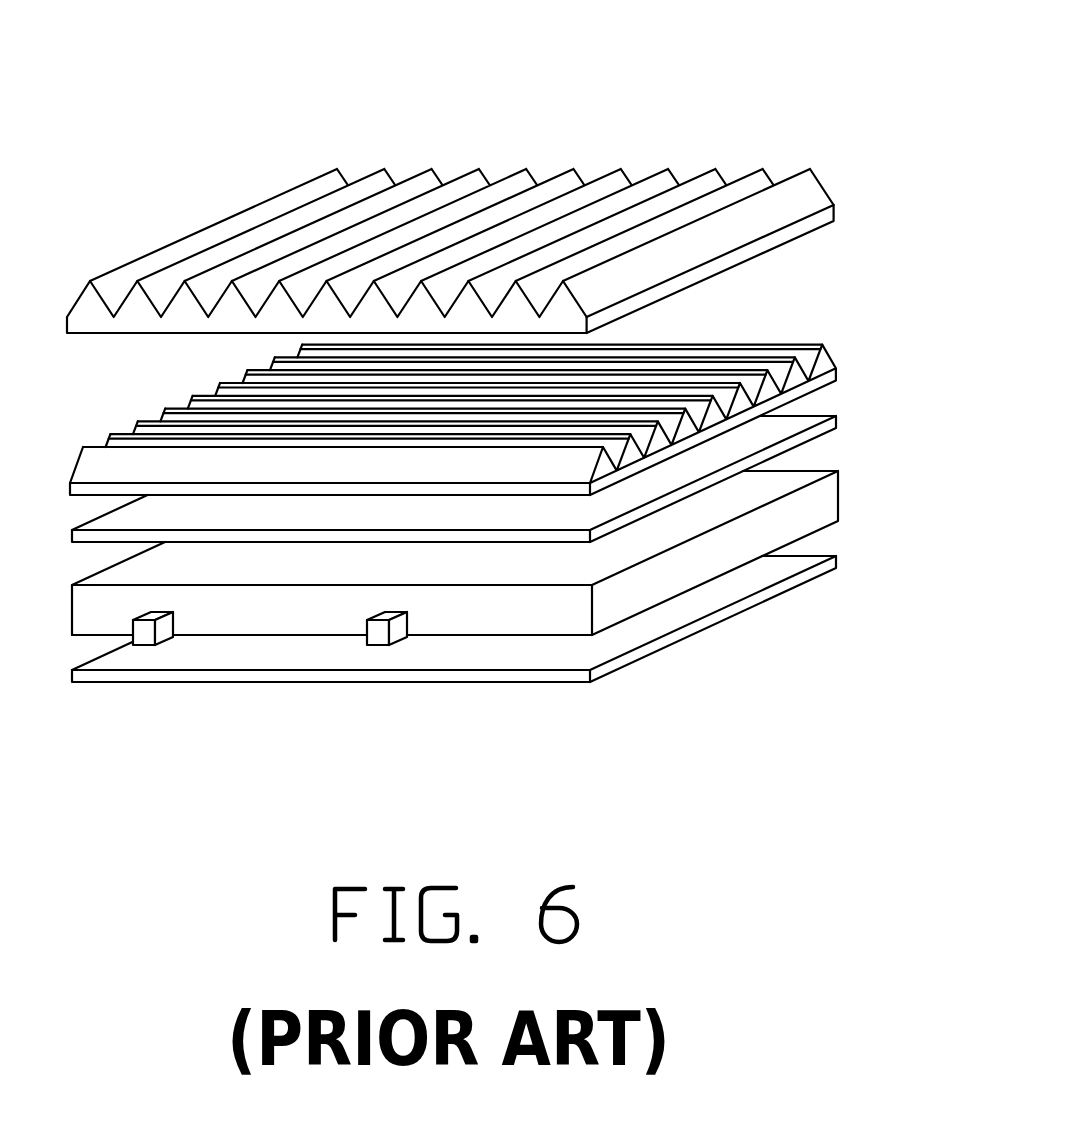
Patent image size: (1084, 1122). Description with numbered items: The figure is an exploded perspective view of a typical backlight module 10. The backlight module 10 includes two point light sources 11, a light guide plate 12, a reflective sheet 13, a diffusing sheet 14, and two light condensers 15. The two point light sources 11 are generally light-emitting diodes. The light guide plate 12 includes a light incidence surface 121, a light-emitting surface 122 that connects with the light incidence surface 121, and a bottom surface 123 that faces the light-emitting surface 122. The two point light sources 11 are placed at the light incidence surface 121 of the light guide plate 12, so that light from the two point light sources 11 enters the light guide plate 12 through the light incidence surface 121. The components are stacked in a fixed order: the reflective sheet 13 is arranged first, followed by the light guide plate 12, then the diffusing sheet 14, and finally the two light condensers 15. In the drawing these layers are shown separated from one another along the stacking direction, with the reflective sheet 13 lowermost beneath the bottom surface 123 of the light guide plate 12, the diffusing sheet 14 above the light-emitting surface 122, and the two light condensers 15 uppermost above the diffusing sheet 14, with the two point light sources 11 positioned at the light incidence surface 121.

The backlight module 10 is at (490, 42).
The point light sources 11 is at (375, 632).
The light guide plate 12 is at (494, 642).
The light incidence surface 121 is at (473, 605).
The light-emitting surface 122 is at (568, 567).
The bottom surface 123 is at (562, 634).
The reflective sheet 13 is at (765, 573).
The diffusing sheet 14 is at (808, 438).
The light condensers 15 is at (820, 373).